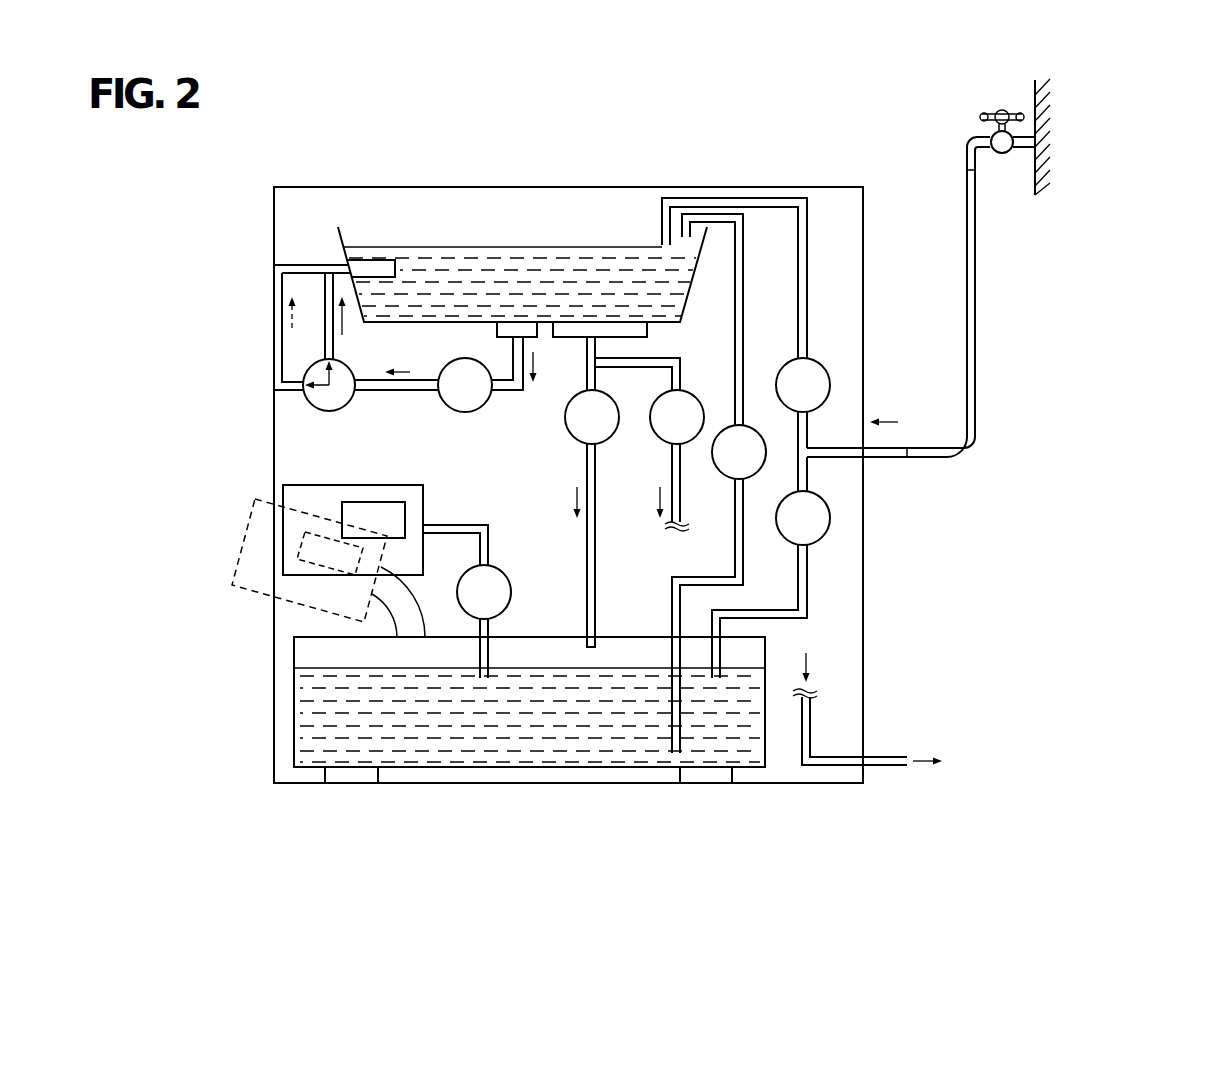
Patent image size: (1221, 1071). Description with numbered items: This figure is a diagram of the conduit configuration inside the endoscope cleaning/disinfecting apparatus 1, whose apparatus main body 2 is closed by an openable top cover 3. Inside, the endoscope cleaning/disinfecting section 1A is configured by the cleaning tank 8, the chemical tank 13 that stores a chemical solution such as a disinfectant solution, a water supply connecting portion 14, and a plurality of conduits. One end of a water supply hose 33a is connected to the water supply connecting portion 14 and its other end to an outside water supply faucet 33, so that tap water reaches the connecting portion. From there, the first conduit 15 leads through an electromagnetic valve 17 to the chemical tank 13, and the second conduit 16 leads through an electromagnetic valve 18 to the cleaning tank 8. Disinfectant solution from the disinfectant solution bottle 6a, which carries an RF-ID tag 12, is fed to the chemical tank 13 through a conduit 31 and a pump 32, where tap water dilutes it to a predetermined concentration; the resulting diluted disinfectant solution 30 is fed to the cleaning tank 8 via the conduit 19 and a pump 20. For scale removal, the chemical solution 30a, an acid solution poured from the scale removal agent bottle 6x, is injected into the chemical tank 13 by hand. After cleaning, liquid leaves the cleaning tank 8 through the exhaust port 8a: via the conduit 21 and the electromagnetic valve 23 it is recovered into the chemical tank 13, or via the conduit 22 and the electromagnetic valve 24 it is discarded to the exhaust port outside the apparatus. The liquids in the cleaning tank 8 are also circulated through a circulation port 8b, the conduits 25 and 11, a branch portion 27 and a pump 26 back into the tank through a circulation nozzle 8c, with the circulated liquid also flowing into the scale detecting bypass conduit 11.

The endoscope cleaning/disinfecting apparatus 1 is at (621, 138).
The endoscope cleaning/disinfecting section 1A is at (636, 177).
The apparatus main body 2 is at (864, 546).
The top cover 3 is at (781, 186).
The disinfectant solution bottle 6a is at (358, 485).
The scale removal agent bottle 6x is at (244, 592).
The cleaning tank 8 is at (530, 490).
The exhaust port 8a is at (570, 338).
The circulation port 8b is at (497, 330).
The circulation nozzle 8c is at (379, 261).
The scale detecting bypass conduit 11 is at (274, 327).
The RF-ID tag 12 is at (392, 502).
The chemical tank 13 is at (630, 636).
The water supply connecting portion 14 is at (893, 459).
The first conduit 15 is at (808, 576).
The second conduit 16 is at (808, 296).
The electromagnetic valve 17 is at (816, 505).
The electromagnetic valve 18 is at (787, 411).
The conduit 19 is at (744, 564).
The pump 20 is at (731, 476).
The conduit 21 is at (587, 456).
The conduit 22 is at (681, 369).
The electromagnetic valve 23 is at (565, 418).
The electromagnetic valve 24 is at (660, 441).
The conduit 25 is at (335, 341).
The pump 26 is at (466, 412).
The branch portion 27 is at (333, 411).
The diluted disinfectant solution 30 is at (530, 518).
The chemical solution 30a is at (454, 258).
The conduit 31 is at (456, 525).
The pump 32 is at (513, 592).
The water supply faucet 33 is at (971, 143).
The water supply hose 33a is at (978, 288).